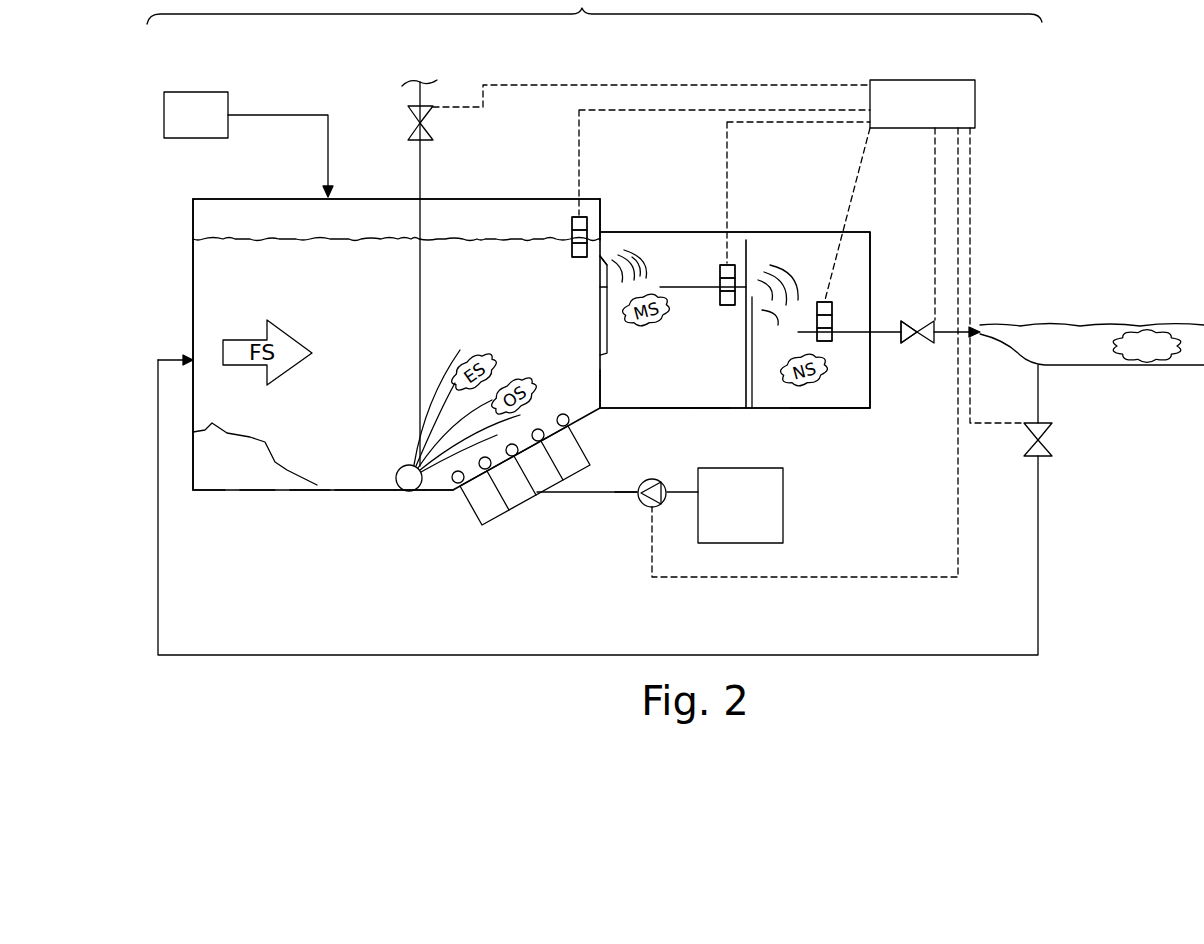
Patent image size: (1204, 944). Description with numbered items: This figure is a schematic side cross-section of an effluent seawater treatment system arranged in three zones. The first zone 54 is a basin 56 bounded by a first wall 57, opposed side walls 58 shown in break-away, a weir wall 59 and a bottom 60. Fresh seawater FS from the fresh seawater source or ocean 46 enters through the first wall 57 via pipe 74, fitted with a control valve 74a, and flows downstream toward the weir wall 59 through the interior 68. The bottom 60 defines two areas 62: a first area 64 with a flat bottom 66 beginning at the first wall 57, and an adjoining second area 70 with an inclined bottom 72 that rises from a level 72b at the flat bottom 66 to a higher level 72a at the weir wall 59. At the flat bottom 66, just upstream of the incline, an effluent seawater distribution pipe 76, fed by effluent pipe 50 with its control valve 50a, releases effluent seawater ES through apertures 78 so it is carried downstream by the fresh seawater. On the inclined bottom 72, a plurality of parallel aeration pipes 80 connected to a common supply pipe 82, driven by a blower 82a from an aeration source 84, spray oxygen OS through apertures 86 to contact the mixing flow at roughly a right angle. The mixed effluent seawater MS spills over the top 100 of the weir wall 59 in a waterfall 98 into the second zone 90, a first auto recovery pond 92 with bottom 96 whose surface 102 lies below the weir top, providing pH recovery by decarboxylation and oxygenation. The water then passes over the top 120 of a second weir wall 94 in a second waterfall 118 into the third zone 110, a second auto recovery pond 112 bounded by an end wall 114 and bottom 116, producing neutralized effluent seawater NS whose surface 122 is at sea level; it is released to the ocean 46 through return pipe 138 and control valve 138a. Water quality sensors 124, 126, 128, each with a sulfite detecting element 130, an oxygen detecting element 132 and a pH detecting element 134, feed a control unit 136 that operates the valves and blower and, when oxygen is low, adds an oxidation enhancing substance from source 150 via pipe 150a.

The fresh seawater source or ocean 46 is at (1069, 332).
The effluent pipe 50 is at (422, 168).
The control valve 50a is at (410, 132).
The first zone 54 is at (526, 182).
The basin 56 is at (213, 288).
The first wall 57 is at (193, 328).
The opposed side walls 58 is at (253, 197).
The weir wall 59 is at (600, 287).
The bottom 60 is at (317, 493).
The areas 62 is at (570, 213).
The first area 64 is at (380, 493).
The flat bottom 66 is at (350, 493).
The interior 68 is at (213, 253).
The second area 70 is at (588, 418).
The inclined bottom 72 is at (403, 462).
The level 72a is at (603, 398).
The level 72b is at (450, 493).
The pipe 74 is at (1022, 592).
The control valve 74a is at (1045, 442).
The effluent seawater distribution pipe 76 is at (410, 493).
The apertures 78 is at (393, 463).
The aeration pipes 80 is at (528, 493).
The supply pipe 82 is at (652, 408).
The blower 82a is at (640, 505).
The aeration source 84 is at (710, 505).
The apertures 86 is at (460, 471).
The second zone 90 is at (706, 218).
The first auto recovery pond 92 is at (712, 408).
The second weir wall 94 is at (743, 347).
The bottom 96 is at (663, 406).
The waterfall 98 is at (612, 258).
The top 100 is at (600, 267).
The surface 102 is at (627, 240).
The third zone 110 is at (860, 220).
The second auto recovery pond 112 is at (852, 290).
The end wall 114 is at (872, 404).
The bottom 116 is at (837, 412).
The waterfall 118 is at (765, 272).
The top 120 is at (746, 307).
The surface 122 is at (855, 322).
The water quality sensor 124 is at (582, 210).
The water quality sensor 126 is at (730, 265).
The water quality sensor 128 is at (835, 300).
The sulfite detecting element 130 is at (572, 250).
The oxygen detecting element 132 is at (572, 237).
The pH detecting element 134 is at (572, 222).
The control unit 136 is at (728, 328).
The return pipe 138 is at (883, 335).
The control valve 138a is at (920, 343).
The oxidation enhancing substance source 150 is at (196, 115).
The pipe 150a is at (282, 113).